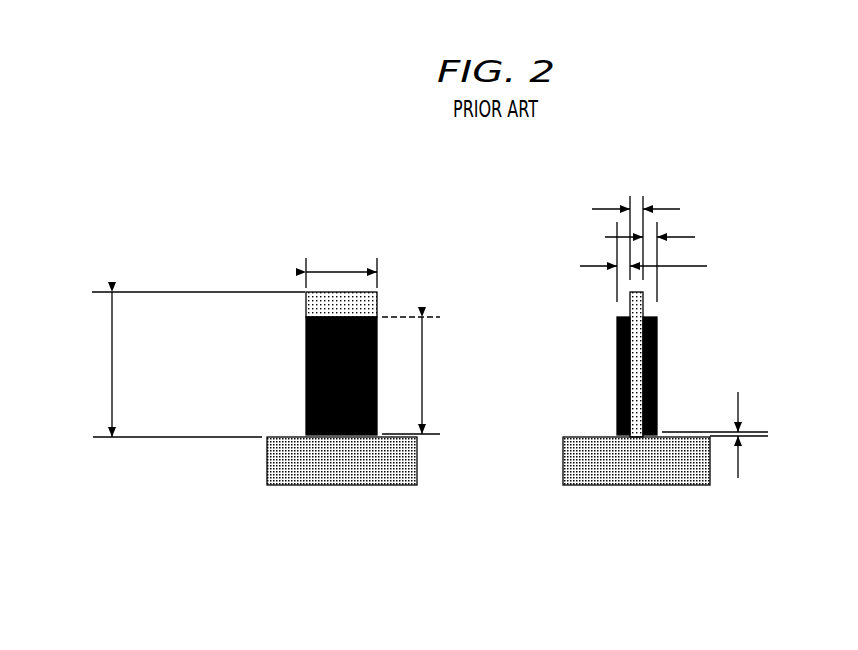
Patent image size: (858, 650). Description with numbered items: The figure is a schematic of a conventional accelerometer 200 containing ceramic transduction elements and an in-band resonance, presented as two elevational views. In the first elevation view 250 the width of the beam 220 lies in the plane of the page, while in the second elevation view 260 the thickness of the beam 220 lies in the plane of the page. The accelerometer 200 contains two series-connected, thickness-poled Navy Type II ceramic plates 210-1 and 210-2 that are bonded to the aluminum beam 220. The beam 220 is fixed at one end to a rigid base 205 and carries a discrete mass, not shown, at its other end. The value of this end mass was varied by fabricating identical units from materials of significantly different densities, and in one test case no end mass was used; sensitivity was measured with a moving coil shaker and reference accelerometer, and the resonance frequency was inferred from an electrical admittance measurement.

The accelerometer 200 is at (764, 134).
The first elevation view 250 is at (359, 151).
The second elevation view 260 is at (654, 151).
The Navy Type II ceramic plate 210-1 is at (306, 406).
The Navy Type II ceramic plate 210-2 is at (613, 373).
The rigid base 205 is at (291, 473).
The beam 220 is at (637, 432).